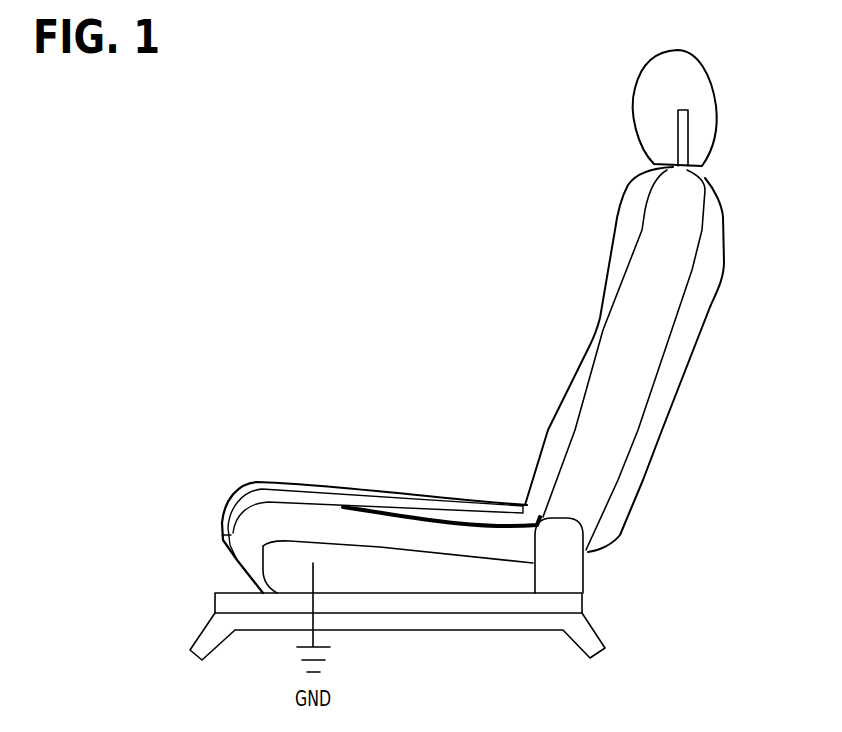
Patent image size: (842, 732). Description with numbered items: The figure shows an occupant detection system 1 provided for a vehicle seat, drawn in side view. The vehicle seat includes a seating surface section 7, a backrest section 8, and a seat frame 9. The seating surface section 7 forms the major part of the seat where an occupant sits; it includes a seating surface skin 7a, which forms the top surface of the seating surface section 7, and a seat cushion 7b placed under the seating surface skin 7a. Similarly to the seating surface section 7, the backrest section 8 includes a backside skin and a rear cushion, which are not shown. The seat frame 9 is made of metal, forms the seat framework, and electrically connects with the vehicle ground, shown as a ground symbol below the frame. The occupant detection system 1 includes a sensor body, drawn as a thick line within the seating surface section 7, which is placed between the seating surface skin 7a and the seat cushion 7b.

The occupant detection system 1 is at (448, 518).
The seating surface section 7 is at (337, 489).
The seating surface skin 7a is at (240, 490).
The seat cushion 7b is at (248, 543).
The backrest section 8 is at (587, 330).
The seat frame 9 is at (635, 368).